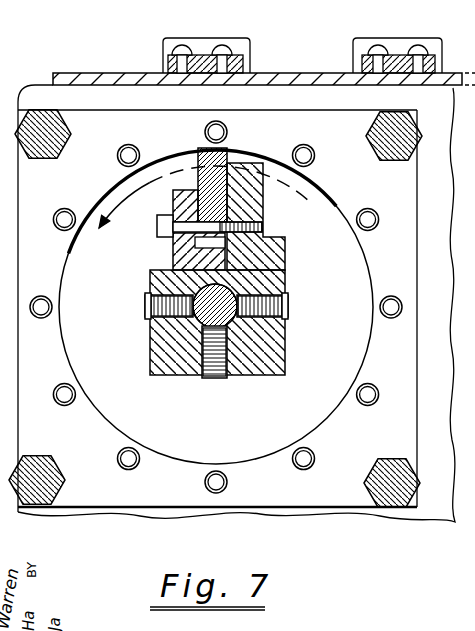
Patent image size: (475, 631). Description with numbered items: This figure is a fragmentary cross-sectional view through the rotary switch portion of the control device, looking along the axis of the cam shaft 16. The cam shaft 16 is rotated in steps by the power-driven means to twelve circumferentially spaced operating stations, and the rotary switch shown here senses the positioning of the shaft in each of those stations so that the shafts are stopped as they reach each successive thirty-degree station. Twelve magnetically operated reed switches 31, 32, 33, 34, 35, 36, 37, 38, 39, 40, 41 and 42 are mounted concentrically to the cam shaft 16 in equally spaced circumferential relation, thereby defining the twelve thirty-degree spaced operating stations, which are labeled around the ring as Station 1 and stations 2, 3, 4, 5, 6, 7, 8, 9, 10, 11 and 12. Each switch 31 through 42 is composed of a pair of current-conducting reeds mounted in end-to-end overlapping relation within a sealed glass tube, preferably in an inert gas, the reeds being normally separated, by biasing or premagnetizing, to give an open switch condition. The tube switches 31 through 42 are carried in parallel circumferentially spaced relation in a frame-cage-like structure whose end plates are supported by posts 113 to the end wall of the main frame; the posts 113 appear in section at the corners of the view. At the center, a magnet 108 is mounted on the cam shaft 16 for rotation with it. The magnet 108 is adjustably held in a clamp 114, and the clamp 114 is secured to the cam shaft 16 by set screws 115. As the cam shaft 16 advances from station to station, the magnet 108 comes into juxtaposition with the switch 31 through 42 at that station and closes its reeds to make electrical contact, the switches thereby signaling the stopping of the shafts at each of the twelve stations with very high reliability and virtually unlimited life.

The station 1 is at (183, 126).
The station 2 is at (151, 150).
The station 3 is at (81, 201).
The station 4 is at (42, 278).
The station 5 is at (48, 376).
The station 6 is at (110, 446).
The station 7 is at (188, 479).
The station 8 is at (281, 472).
The station 9 is at (356, 412).
The station 10 is at (391, 318).
The station 11 is at (380, 246).
The station 12 is at (328, 173).
The switch 31 is at (205, 127).
The switch 32 is at (140, 147).
The switch 33 is at (67, 207).
The switch 34 is at (35, 288).
The switch 35 is at (55, 384).
The switch 36 is at (113, 460).
The switch 37 is at (199, 489).
The switch 38 is at (288, 467).
The switch 39 is at (365, 407).
The switch 40 is at (394, 325).
The switch 41 is at (379, 233).
The switch 42 is at (317, 159).
The cam shaft 16 is at (228, 296).
The magnet 108 is at (210, 184).
The post 113 is at (63, 143).
The clamp 114 is at (252, 207).
The set screw 115 is at (148, 303).